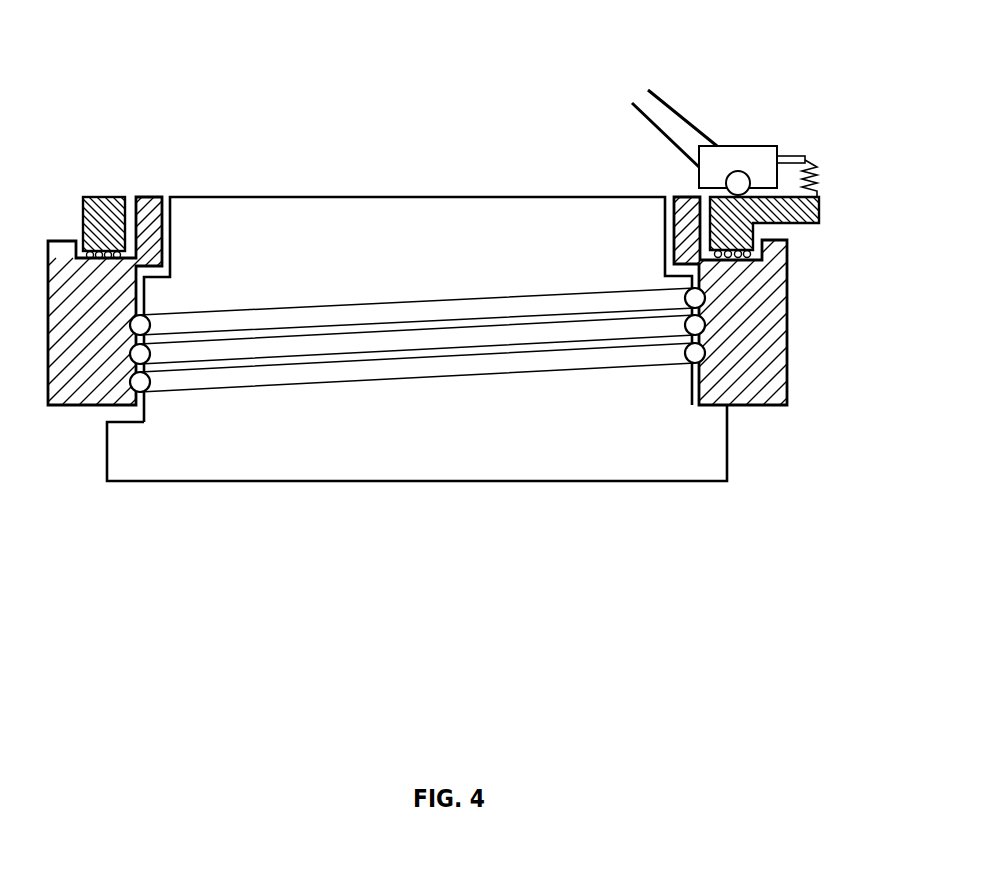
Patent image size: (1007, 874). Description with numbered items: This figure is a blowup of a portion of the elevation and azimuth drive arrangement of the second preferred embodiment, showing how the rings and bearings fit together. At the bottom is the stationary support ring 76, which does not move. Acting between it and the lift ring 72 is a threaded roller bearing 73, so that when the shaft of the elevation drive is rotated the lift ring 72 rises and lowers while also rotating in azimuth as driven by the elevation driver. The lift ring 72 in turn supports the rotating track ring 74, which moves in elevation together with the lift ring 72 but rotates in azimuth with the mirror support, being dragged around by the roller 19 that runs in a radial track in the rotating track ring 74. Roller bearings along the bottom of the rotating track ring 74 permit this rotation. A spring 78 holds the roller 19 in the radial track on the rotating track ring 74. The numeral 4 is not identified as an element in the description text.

The transfer arm 4 is at (647, 90).
The roller 19 is at (740, 175).
The lift ring 72 is at (765, 327).
The threaded roller bearing 73 is at (690, 367).
The rotating track ring 74 is at (107, 197).
The stationary support ring 76 is at (695, 443).
The spring 78 is at (815, 172).